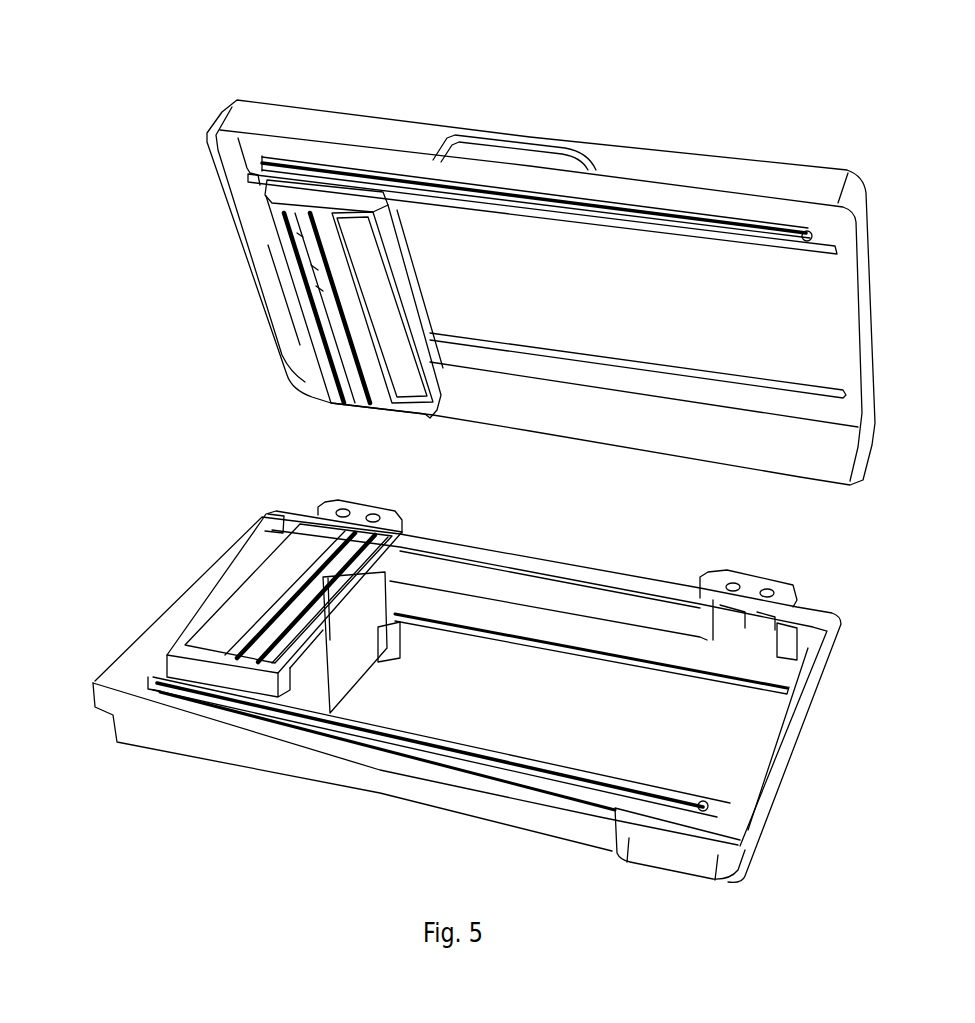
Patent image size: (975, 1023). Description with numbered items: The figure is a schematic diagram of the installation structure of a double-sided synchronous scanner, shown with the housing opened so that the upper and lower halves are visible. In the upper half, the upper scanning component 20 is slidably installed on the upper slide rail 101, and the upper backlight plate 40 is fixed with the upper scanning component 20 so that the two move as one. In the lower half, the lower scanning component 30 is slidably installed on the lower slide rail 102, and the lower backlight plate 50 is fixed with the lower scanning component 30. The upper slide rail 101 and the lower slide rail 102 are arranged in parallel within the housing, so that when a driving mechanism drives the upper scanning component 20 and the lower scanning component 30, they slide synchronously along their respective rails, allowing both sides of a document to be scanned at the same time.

The upper scanning component 20 is at (213, 128).
The upper slide rail 101 is at (538, 212).
The upper backlight plate 40 is at (378, 305).
The lower backlight plate 50 is at (275, 570).
The lower scanning component 30 is at (270, 647).
The lower slide rail 102 is at (418, 742).